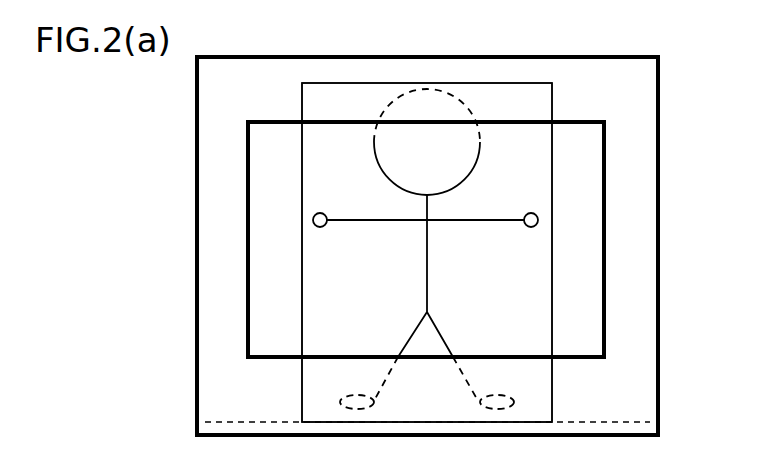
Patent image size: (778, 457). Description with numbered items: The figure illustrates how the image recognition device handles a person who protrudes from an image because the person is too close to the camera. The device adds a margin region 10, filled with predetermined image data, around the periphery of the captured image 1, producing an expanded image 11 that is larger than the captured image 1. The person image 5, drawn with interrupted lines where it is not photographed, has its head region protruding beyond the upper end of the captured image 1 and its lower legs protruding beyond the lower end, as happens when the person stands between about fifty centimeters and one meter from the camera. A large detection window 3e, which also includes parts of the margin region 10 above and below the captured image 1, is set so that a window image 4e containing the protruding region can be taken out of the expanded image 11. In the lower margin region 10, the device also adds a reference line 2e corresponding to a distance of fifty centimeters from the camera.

The captured image 1 is at (248, 160).
The reference line 2e is at (229, 419).
The detection window 3e is at (552, 389).
The window image 4e is at (473, 227).
The person image 5 is at (480, 153).
The margin region 10 is at (637, 262).
The expanded image 11 is at (658, 88).